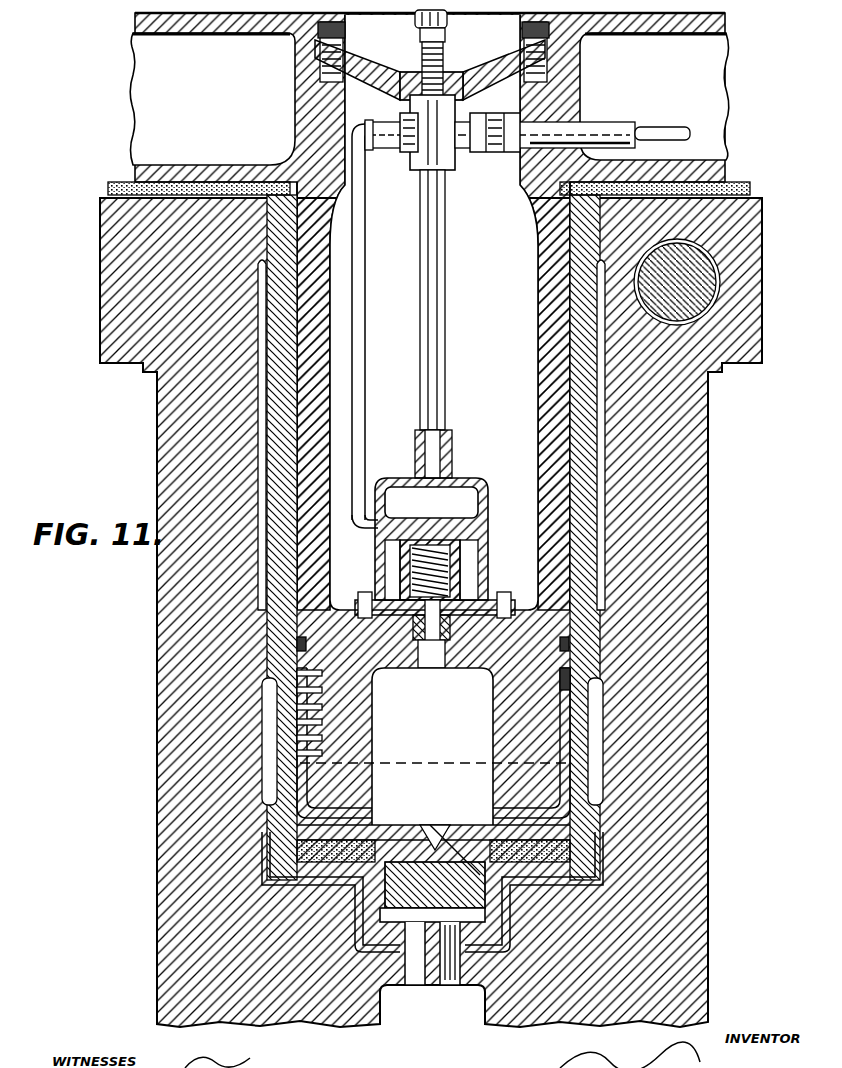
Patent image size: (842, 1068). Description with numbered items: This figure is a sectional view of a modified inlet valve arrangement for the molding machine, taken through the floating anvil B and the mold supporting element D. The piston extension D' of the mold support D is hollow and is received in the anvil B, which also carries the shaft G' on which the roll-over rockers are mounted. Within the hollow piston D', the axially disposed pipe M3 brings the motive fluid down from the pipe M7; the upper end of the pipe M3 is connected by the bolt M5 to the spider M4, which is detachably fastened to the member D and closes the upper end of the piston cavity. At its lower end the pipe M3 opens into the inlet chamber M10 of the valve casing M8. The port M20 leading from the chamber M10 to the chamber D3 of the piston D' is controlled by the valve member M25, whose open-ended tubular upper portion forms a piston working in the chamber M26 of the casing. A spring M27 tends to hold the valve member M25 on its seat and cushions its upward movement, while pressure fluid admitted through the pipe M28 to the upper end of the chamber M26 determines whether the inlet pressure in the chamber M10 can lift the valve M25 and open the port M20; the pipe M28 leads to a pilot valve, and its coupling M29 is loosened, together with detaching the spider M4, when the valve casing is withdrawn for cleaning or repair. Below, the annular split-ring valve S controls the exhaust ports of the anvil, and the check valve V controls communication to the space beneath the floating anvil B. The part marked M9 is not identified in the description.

The floating anvil B is at (157, 404).
The mold supporting element D is at (212, 99).
The piston extension D' is at (435, 312).
The chamber D3 is at (374, 725).
The shaft G' is at (719, 282).
The annular valve member S is at (558, 688).
The check valve V is at (430, 990).
The pipe section M3 is at (418, 288).
The spider M4 is at (490, 62).
The bolt M5 is at (395, 70).
The pipe M7 is at (613, 130).
The valve casing M8 is at (488, 505).
The nut M9 is at (484, 155).
The inlet chamber M10 is at (466, 492).
The port M20 is at (445, 625).
The valve member M25 is at (470, 603).
The chamber M26 is at (405, 553).
The spring M27 is at (408, 578).
The pipe M28 is at (366, 362).
The coupling M29 is at (403, 155).